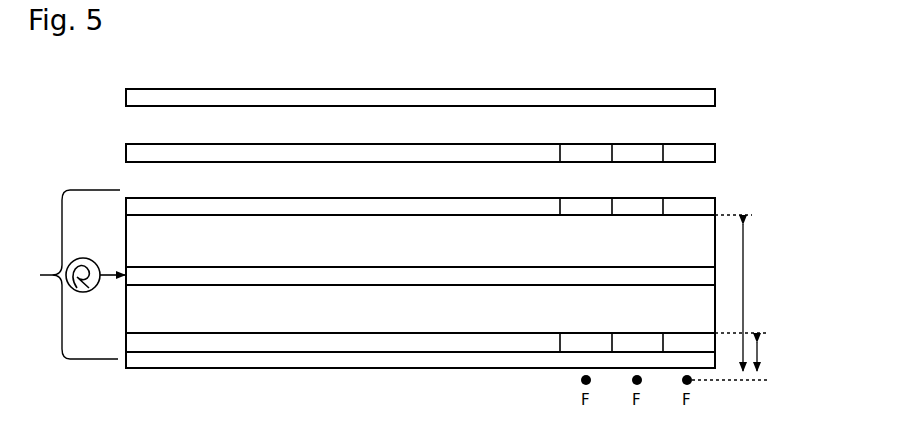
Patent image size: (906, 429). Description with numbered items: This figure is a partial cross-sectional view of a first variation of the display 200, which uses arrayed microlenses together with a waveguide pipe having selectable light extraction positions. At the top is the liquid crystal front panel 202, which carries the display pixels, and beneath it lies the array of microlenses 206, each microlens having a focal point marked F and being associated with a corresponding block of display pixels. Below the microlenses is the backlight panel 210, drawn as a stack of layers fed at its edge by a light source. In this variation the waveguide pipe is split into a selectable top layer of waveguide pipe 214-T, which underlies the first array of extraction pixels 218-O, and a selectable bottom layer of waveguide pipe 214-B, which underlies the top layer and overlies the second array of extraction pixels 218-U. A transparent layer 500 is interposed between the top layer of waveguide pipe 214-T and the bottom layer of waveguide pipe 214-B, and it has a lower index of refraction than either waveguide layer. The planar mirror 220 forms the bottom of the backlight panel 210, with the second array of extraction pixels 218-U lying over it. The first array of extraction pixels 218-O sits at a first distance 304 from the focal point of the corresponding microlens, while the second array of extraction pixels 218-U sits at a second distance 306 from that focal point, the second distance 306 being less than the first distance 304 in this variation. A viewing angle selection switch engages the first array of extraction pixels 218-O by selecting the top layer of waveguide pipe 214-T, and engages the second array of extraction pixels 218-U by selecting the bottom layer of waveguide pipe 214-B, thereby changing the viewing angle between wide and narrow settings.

The display 200 is at (262, 51).
The liquid crystal front panel 202 is at (400, 94).
The array of microlenses 206 is at (625, 150).
The backlight panel 210 is at (40, 277).
The top layer of waveguide pipe 214-T is at (420, 234).
The bottom layer of waveguide pipe 214-B is at (420, 302).
The first array of extraction pixels 218-O is at (690, 207).
The second array of extraction pixels 218-U is at (690, 343).
The transparent layer 500 is at (690, 272).
The planar mirror 220 is at (395, 357).
The first distance 304 is at (744, 274).
The second distance 306 is at (758, 350).